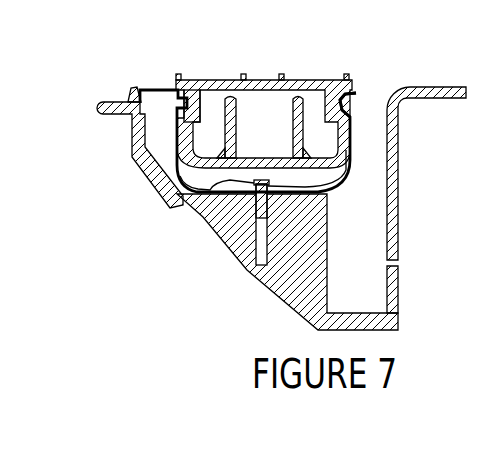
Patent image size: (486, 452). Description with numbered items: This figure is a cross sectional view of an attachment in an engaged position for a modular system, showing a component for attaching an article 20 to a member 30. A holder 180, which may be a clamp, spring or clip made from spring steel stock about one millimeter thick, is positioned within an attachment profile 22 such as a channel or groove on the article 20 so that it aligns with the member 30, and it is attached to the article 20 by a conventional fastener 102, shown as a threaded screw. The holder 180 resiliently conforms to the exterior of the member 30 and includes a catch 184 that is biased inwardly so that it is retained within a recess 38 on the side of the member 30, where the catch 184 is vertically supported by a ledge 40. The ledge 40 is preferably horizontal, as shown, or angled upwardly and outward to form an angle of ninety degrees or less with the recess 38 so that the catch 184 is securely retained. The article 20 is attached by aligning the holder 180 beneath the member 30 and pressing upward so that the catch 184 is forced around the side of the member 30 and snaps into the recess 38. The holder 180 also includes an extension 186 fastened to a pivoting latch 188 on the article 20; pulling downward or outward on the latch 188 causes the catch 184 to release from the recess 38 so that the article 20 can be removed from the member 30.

The article 20 is at (273, 292).
The attachment profile 22 is at (318, 178).
The member 30 is at (352, 79).
The recess 38 is at (346, 100).
The ledge 40 is at (399, 133).
The fastener 102 is at (204, 212).
The holder 180 is at (154, 74).
The catch 184 is at (191, 86).
The extension 186 is at (124, 110).
The latch 188 is at (122, 113).